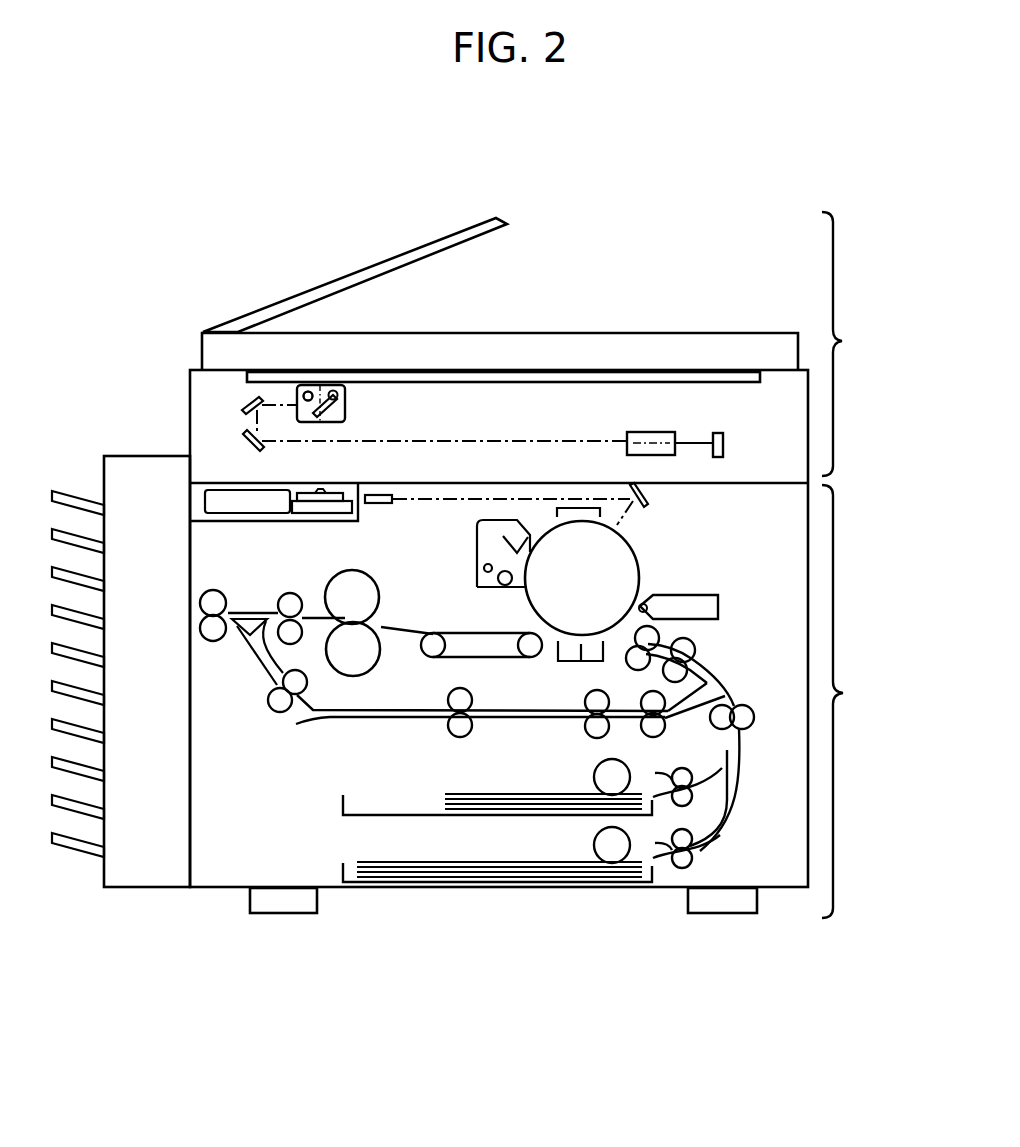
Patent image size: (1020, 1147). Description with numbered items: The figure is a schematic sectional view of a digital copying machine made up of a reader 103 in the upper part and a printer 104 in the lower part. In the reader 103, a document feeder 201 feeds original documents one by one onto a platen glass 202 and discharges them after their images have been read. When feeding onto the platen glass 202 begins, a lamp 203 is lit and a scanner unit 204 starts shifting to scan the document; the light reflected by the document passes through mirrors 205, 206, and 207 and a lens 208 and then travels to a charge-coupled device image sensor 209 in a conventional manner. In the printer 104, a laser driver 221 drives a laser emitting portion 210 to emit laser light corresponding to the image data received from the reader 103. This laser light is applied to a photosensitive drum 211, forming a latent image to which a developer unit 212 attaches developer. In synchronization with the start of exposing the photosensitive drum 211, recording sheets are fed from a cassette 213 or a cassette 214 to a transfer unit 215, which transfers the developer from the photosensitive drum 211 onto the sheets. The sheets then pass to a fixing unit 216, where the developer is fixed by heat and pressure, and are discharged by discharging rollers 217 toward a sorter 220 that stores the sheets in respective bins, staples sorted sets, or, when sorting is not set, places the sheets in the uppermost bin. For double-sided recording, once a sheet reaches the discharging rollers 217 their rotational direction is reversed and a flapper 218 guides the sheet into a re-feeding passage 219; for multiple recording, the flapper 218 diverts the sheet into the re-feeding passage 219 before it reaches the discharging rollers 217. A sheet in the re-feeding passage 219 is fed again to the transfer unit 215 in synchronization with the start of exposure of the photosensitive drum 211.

The reader 103 is at (862, 344).
The printer 104 is at (862, 701).
The document feeder 201 is at (0, 0).
The platen glass 202 is at (700, 378).
The lamp 203 is at (324, 386).
The scanner unit 204 is at (345, 405).
The mirror 205 is at (325, 416).
The mirror 206 is at (243, 406).
The mirror 207 is at (244, 439).
The lens 208 is at (643, 430).
The CCD image sensor 209 is at (719, 433).
The laser emitting portion 210 is at (337, 522).
The photosensitive drum 211 is at (639, 558).
The developer unit 212 is at (711, 593).
The cassette 213 is at (342, 806).
The cassette 214 is at (343, 873).
The transfer unit 215 is at (574, 662).
The fixing unit 216 is at (378, 588).
The discharging rollers 217 is at (218, 598).
The flapper 218 is at (241, 637).
The re-feeding passage 219 is at (439, 722).
The sorter 220 is at (150, 888).
The laser driver 221 is at (205, 501).